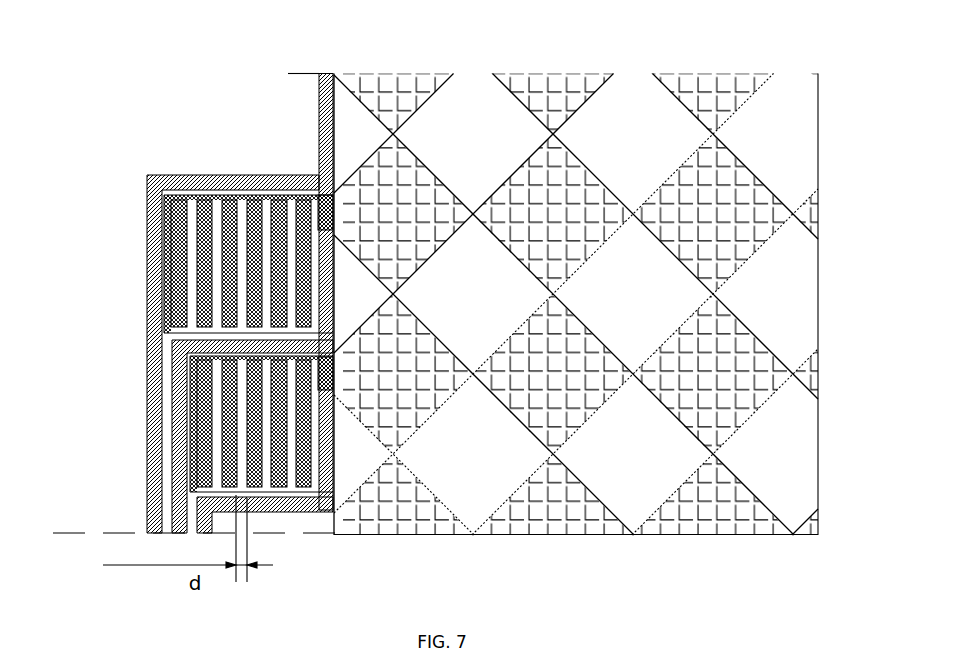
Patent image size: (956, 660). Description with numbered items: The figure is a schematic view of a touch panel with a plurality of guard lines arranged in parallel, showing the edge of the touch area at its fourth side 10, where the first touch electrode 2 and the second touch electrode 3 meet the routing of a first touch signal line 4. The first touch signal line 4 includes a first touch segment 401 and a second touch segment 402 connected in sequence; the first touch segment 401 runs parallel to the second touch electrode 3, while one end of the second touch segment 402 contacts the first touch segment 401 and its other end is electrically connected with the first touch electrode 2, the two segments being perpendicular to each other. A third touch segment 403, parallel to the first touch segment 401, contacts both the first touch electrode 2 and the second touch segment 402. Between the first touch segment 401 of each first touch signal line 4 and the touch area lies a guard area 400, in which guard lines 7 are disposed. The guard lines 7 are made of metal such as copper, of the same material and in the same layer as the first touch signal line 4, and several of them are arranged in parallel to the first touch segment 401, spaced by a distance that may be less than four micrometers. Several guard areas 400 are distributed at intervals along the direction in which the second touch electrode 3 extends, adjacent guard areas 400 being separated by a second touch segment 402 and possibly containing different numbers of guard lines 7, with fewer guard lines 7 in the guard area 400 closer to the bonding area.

The first touch electrode 2 is at (480, 117).
The second touch electrode 3 is at (553, 93).
The first touch signal line 4 is at (194, 283).
The guard line 7 is at (318, 180).
The fourth side 10 is at (335, 130).
The guard area 400 is at (165, 258).
The first touch segment 401 is at (147, 237).
The second touch segment 402 is at (227, 173).
The third touch segment 403 is at (318, 123).